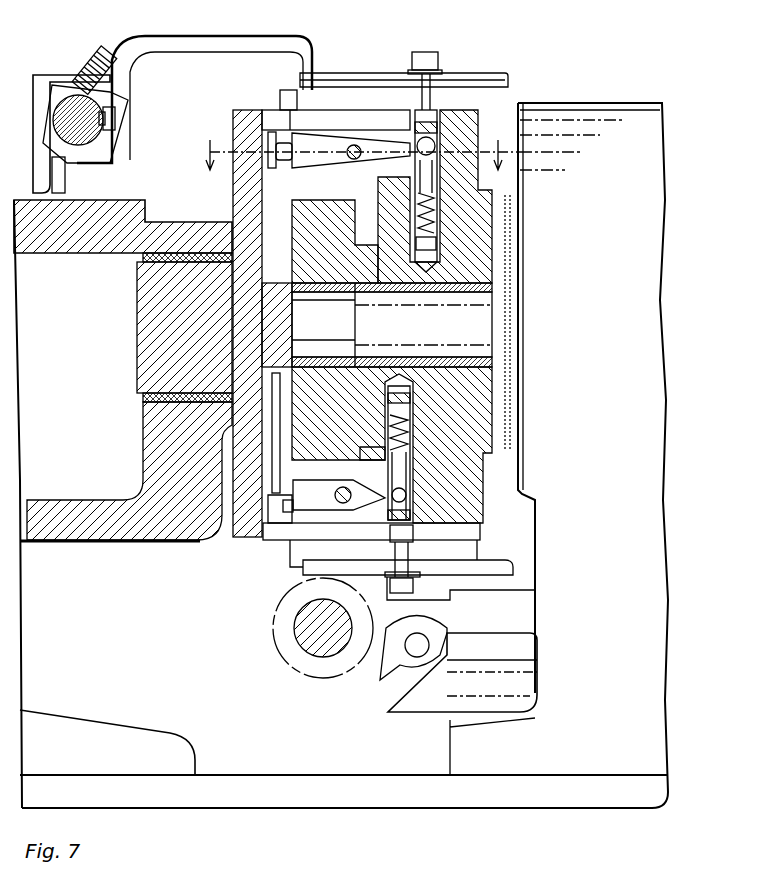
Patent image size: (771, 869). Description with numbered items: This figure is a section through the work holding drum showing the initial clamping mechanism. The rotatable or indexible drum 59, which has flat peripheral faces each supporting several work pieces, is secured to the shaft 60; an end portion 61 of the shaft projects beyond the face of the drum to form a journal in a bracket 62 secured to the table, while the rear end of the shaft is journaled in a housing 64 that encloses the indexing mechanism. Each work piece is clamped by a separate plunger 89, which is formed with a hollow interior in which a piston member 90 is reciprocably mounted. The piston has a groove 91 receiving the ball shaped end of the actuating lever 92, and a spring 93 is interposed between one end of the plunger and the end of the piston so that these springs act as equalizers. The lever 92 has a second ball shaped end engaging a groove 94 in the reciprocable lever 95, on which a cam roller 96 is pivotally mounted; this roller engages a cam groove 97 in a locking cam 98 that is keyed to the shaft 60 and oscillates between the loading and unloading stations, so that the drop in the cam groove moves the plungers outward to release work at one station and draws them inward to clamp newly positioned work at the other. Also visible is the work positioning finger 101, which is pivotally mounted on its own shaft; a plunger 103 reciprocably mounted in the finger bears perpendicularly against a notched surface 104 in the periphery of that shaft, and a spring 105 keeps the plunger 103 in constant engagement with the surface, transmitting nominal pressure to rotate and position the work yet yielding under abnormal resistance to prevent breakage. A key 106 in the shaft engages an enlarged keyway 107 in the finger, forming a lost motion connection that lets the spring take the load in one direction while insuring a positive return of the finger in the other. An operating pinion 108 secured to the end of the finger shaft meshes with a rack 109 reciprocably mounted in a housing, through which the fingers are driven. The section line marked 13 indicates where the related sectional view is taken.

The section line 13 is at (359, 167).
The drum 59 is at (480, 122).
The shaft 60 is at (480, 322).
The end portion 61 is at (150, 384).
The bracket 62 is at (103, 542).
The housing 64 is at (652, 168).
The plunger 89 is at (430, 46).
The piston member 90 is at (405, 470).
The groove 91 is at (400, 505).
The actuating lever 92 is at (313, 506).
The spring 93 is at (290, 526).
The groove 94 is at (280, 512).
The reciprocable lever 95 is at (268, 496).
The cam roller 96 is at (339, 494).
The cam groove 97 is at (300, 210).
The locking cam 98 is at (325, 214).
The finger 101 is at (305, 50).
The plunger 103 is at (68, 80).
The notched surface 104 is at (45, 130).
The spring 105 is at (80, 48).
The key 106 is at (112, 110).
The keyway 107 is at (112, 123).
The operating pinion 108 is at (90, 147).
The rack 109 is at (68, 183).